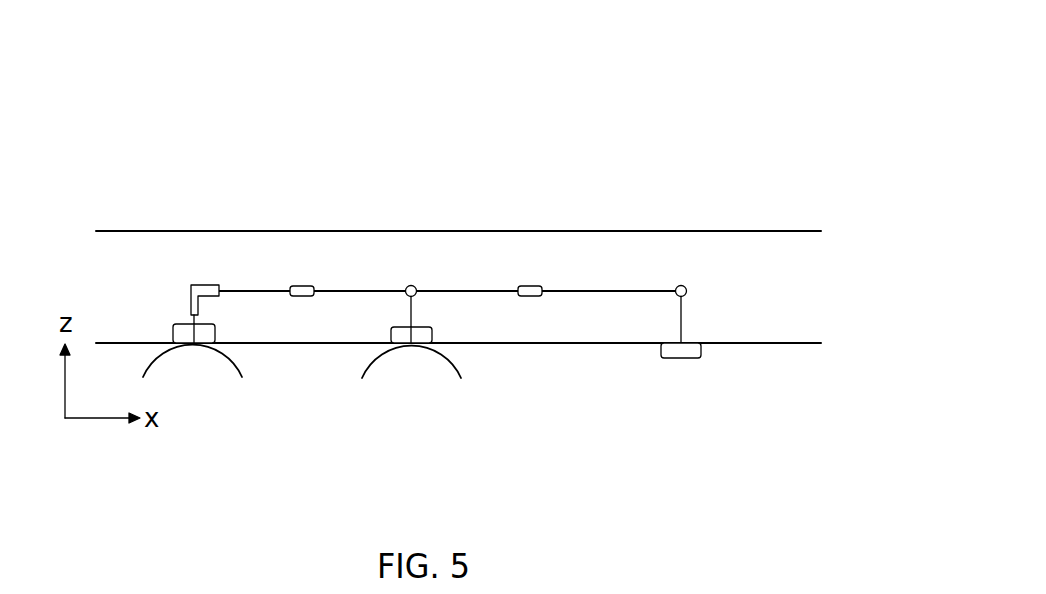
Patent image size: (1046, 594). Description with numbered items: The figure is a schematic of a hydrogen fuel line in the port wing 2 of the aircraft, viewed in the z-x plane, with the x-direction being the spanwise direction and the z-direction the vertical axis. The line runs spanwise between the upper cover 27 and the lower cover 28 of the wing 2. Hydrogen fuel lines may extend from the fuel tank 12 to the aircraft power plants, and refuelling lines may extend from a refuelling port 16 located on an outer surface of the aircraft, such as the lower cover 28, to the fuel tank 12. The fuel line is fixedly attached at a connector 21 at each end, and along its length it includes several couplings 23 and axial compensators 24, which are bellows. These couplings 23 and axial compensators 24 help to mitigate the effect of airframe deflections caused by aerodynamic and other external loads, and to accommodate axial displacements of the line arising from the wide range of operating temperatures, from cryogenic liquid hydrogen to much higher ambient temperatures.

The port wing 2 is at (739, 88).
The fuel tank 12 is at (242, 367).
The refuelling port 16 is at (682, 371).
The connector 21 is at (187, 332).
The coupling 23 is at (198, 284).
The axial compensator 24 is at (302, 286).
The upper cover 27 is at (752, 231).
The lower cover 28 is at (765, 344).